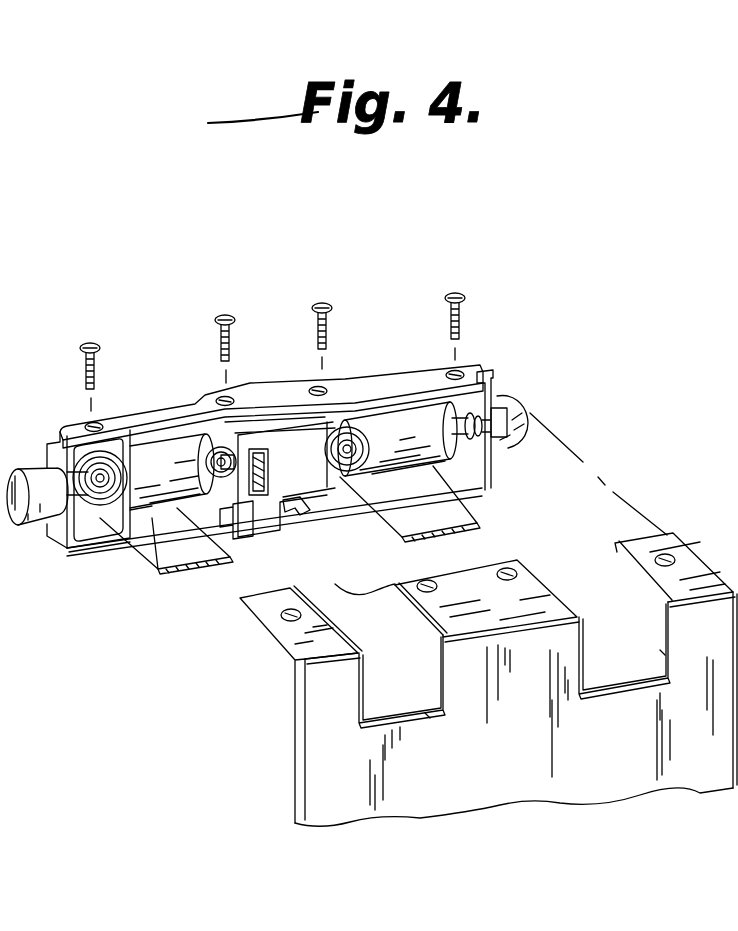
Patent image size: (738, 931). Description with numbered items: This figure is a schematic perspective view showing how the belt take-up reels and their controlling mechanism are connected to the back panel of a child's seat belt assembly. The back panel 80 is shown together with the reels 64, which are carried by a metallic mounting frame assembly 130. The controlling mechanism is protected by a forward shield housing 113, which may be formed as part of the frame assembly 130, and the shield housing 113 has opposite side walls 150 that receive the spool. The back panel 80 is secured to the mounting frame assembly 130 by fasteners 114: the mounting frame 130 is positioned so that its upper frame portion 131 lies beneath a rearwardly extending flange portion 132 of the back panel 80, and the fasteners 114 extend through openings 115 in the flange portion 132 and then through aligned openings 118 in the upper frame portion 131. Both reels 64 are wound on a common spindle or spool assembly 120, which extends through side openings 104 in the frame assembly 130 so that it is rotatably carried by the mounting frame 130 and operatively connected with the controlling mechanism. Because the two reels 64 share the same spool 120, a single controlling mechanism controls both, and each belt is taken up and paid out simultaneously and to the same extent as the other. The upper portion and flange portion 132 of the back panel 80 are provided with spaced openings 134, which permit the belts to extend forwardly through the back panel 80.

The take-up reels 64 is at (162, 452).
The back panel 80 is at (327, 757).
The side openings 104 is at (497, 464).
The forward shield housing 113 is at (283, 481).
The fasteners 114 is at (88, 340).
The openings 115 is at (298, 612).
The openings 118 is at (87, 422).
The spindle or spool assembly 120 is at (107, 508).
The mounting frame assembly 130 is at (484, 366).
The upper frame portion 131 is at (130, 417).
The rearwardly extending flange portion 132 is at (605, 568).
The spaced openings 134 is at (427, 715).
The side walls 150 is at (208, 479).